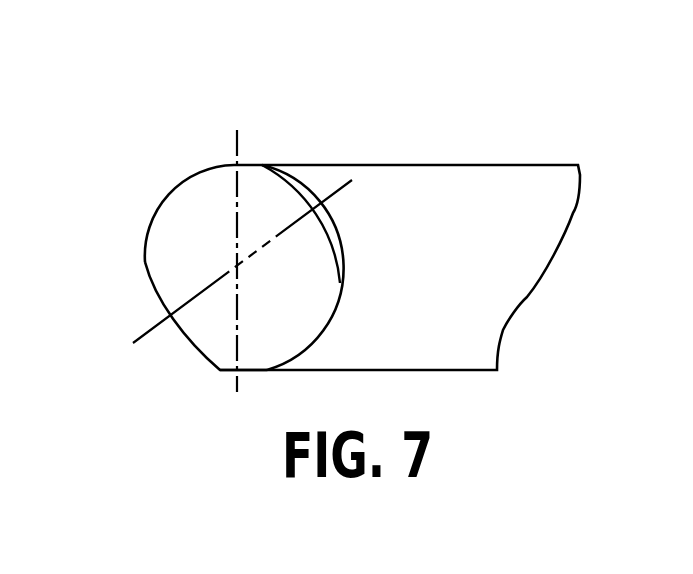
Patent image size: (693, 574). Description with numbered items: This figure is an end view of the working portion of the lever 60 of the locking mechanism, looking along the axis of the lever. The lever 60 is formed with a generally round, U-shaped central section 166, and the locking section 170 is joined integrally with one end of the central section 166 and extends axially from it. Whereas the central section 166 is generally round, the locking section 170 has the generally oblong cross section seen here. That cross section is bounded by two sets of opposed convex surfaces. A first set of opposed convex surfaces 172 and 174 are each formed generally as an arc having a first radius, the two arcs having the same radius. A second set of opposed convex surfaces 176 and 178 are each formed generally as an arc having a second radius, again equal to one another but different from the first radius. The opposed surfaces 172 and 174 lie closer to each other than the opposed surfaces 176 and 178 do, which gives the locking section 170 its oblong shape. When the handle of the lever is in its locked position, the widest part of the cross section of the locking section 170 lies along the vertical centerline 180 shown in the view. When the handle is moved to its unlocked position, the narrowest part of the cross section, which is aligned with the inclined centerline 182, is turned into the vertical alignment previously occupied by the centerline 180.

The lever 60 is at (430, 214).
The U shaped central section 166 is at (478, 195).
The locking section 170 is at (249, 262).
The first convex surface 172 is at (192, 345).
The first convex surface 174 is at (322, 170).
The second convex surface 176 is at (183, 180).
The second convex surface 178 is at (320, 343).
The vertical centerline 180 is at (232, 139).
The centerline 182 is at (165, 326).